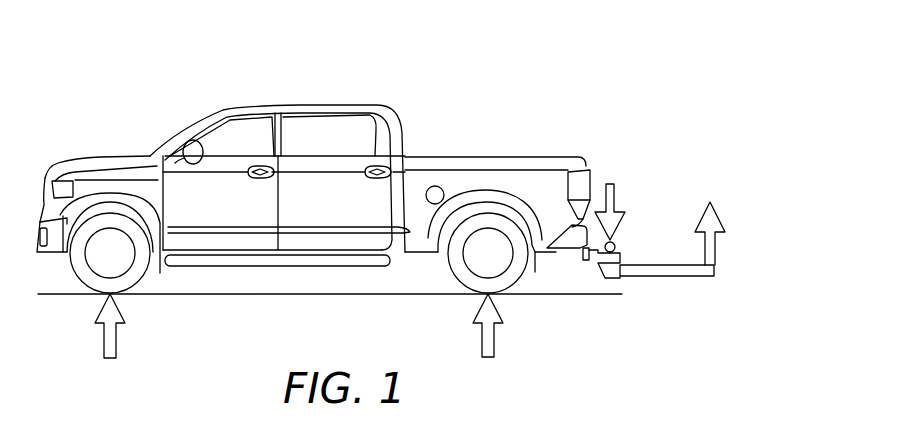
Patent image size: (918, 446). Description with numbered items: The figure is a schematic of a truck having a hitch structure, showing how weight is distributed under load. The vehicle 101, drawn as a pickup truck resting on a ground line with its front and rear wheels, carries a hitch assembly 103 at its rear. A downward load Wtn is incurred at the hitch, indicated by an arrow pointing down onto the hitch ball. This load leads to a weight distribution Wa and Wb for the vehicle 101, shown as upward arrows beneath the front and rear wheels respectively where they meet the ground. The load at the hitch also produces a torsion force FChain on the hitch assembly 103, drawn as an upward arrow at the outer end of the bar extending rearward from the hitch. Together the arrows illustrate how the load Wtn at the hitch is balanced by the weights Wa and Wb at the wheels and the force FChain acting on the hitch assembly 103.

The vehicle 101 is at (323, 83).
The hitch assembly 103 is at (668, 157).
The load at the hitch Wtn is at (632, 212).
The torsion force FChain is at (752, 233).
The weight distribution Wa is at (129, 328).
The weight distribution Wb is at (507, 326).